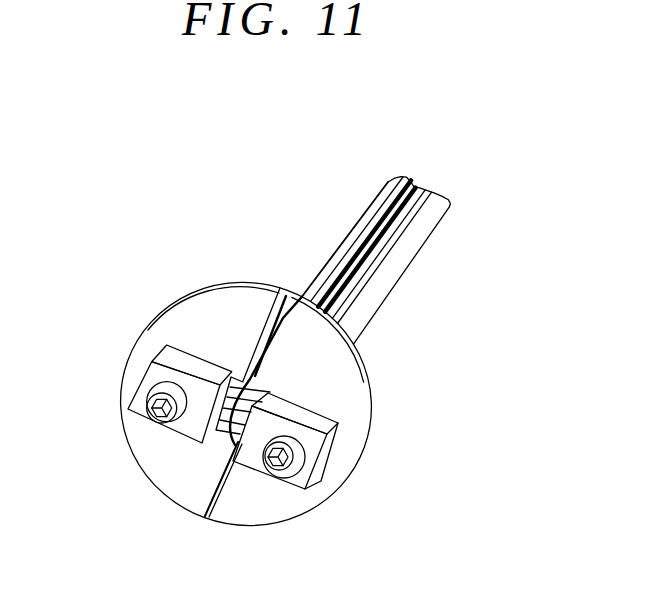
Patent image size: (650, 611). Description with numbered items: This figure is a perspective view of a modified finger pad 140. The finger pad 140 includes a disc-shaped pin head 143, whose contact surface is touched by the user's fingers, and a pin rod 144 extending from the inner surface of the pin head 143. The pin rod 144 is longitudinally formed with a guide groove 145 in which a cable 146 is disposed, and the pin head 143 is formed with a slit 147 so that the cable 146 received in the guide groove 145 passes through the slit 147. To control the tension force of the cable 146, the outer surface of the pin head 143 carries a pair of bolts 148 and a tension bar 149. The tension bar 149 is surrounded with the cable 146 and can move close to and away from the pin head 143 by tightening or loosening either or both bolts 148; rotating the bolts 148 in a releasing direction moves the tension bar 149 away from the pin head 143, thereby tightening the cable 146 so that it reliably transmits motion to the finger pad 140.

The finger pad 140 is at (208, 259).
The pin head 143 is at (292, 503).
The pin rod 144 is at (441, 212).
The guide groove 145 is at (421, 187).
The cable 146 is at (362, 262).
The slit 147 is at (203, 519).
The bolts 148 is at (150, 410).
The tension bar 149 is at (154, 377).